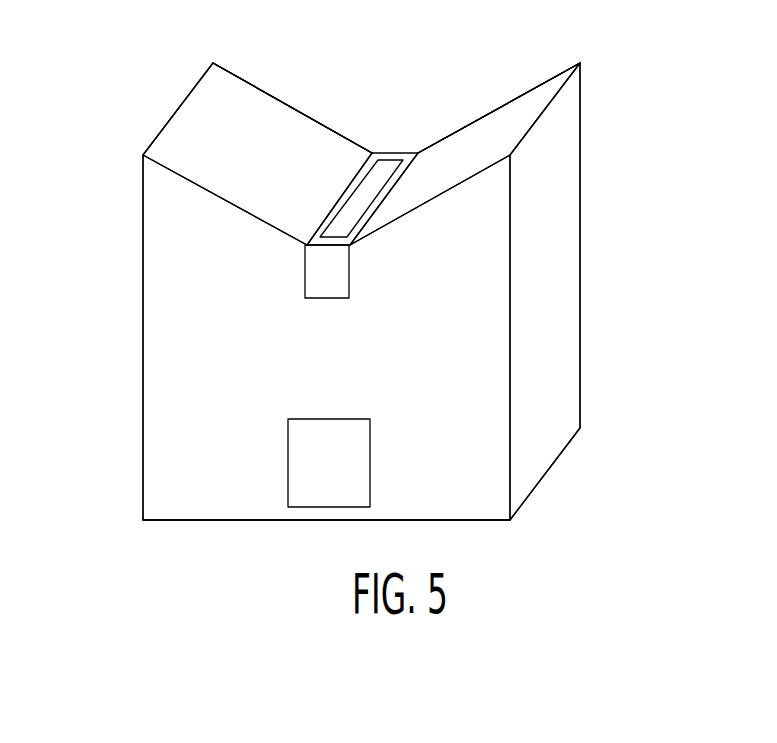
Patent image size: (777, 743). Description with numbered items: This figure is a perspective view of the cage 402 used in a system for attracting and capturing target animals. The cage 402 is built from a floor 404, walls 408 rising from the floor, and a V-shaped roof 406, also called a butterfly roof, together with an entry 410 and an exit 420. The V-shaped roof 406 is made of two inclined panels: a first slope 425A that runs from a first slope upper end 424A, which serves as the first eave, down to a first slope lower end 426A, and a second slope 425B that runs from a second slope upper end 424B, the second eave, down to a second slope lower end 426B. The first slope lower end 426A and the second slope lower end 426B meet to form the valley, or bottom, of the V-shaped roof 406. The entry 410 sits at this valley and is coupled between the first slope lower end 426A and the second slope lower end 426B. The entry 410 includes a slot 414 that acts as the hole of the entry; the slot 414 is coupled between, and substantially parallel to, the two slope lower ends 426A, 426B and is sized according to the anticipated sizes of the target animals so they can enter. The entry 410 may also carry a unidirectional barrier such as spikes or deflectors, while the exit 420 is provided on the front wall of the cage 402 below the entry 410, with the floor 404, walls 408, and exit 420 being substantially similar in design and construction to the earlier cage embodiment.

The cage 402 is at (583, 187).
The floor 404 is at (215, 522).
The V-shaped roof 406 is at (465, 62).
The walls 408 is at (567, 273).
The entry 410 is at (327, 290).
The slot 414 is at (372, 183).
The exit 420 is at (328, 432).
The first slope upper end 424A is at (177, 110).
The second slope upper end 424B is at (555, 93).
The first slope 425A is at (278, 113).
The second slope 425B is at (515, 112).
The first slope lower end 426A is at (332, 207).
The second slope lower end 426B is at (399, 170).